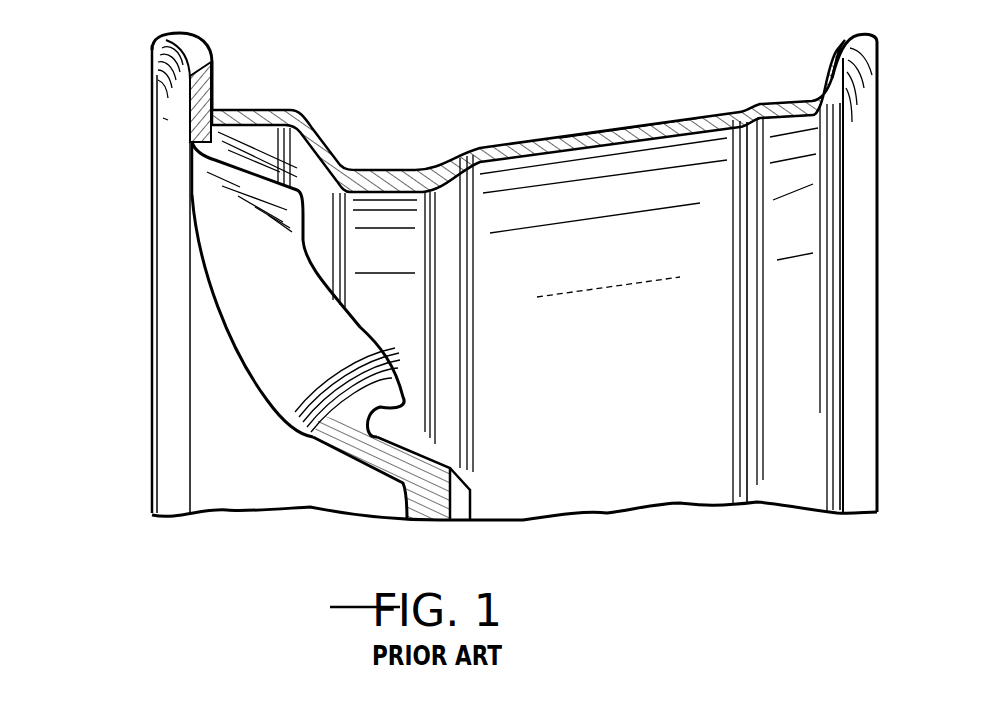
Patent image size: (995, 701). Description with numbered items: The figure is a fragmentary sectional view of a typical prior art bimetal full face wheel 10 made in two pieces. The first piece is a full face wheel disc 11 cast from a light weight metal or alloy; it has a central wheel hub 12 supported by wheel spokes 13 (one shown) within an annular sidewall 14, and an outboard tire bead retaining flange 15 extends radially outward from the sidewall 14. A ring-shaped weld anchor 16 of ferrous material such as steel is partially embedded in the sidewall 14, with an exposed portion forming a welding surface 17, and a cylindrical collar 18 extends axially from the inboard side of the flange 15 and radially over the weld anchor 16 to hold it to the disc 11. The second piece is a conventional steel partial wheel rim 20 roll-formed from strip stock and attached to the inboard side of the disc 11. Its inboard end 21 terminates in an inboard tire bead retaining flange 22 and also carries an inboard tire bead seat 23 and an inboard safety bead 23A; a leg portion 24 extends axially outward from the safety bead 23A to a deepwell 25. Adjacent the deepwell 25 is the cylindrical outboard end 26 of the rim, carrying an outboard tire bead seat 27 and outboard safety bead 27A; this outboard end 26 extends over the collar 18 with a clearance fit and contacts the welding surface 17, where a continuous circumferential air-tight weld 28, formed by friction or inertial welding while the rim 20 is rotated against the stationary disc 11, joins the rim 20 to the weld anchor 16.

The bimetal full face wheel 10 is at (443, 96).
The full face wheel disc 11 is at (147, 415).
The central wheel hub 12 is at (440, 468).
The wheel spokes 13 is at (322, 320).
The annular sidewall 14 is at (235, 197).
The outboard tire bead retaining flange 15 is at (180, 37).
The weld anchor 16 is at (193, 109).
The welding surface 17 is at (213, 84).
The collar 18 is at (215, 170).
The partial wheel rim 20 is at (530, 145).
The inboard end 21 is at (808, 361).
The inboard tire bead retaining flange 22 is at (838, 48).
The inboard tire bead seat 23 is at (783, 100).
The inboard safety bead 23A is at (753, 110).
The leg portion 24 is at (600, 137).
The deepwell 25 is at (390, 180).
The outboard end 26 is at (285, 98).
The outboard tire bead seat 27 is at (222, 93).
The outboard safety bead 27A is at (305, 115).
The weld 28 is at (215, 97).